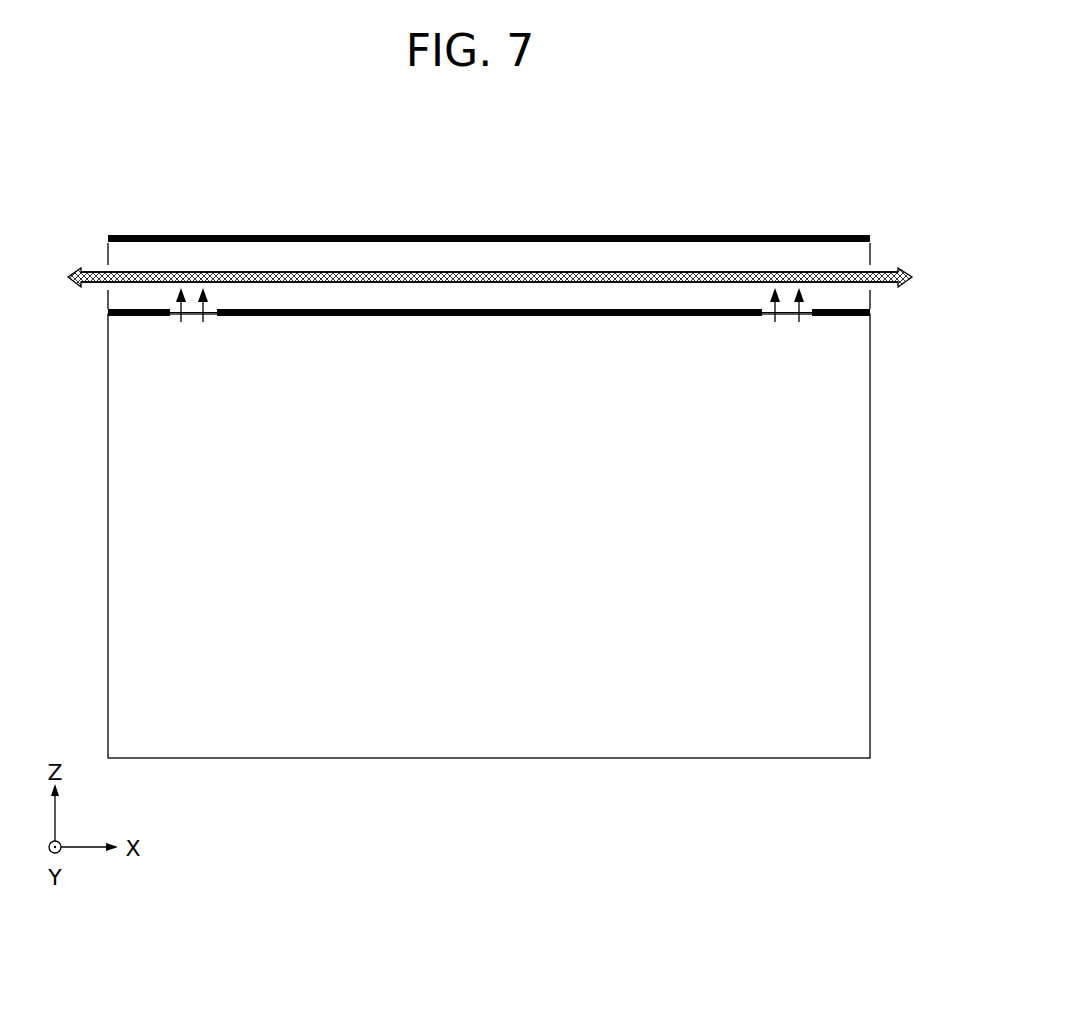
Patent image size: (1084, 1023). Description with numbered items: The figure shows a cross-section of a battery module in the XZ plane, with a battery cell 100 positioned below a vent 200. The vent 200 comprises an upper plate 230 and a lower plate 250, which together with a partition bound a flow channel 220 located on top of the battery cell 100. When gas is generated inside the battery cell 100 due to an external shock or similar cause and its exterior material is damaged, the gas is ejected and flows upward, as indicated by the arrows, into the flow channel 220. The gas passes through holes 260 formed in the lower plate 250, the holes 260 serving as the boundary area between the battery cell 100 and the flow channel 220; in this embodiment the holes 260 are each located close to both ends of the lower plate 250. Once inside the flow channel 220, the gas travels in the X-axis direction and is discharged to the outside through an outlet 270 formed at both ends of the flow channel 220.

The battery cell 100 is at (872, 400).
The vent 200 is at (368, 220).
The flow channel 220 is at (560, 258).
The upper plate 230 is at (442, 234).
The lower plate 250 is at (872, 310).
The hole 260 is at (192, 319).
The outlet 270 is at (872, 263).